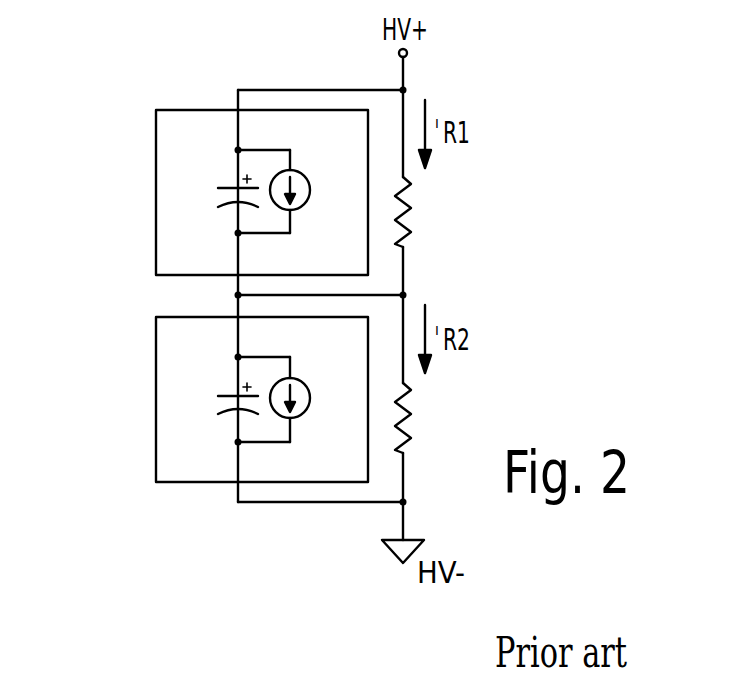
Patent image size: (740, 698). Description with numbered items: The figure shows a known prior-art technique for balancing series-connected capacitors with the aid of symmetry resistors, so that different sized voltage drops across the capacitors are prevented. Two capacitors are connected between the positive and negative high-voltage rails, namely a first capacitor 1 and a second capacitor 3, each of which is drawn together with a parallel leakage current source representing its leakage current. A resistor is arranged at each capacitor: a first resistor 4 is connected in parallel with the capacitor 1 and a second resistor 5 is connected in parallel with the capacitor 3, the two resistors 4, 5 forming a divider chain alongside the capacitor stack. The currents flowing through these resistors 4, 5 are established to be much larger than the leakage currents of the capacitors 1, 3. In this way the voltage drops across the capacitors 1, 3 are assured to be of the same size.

The capacitor 1 is at (217, 192).
The capacitor 3 is at (232, 388).
The resistor 4 is at (420, 195).
The resistor 5 is at (420, 405).